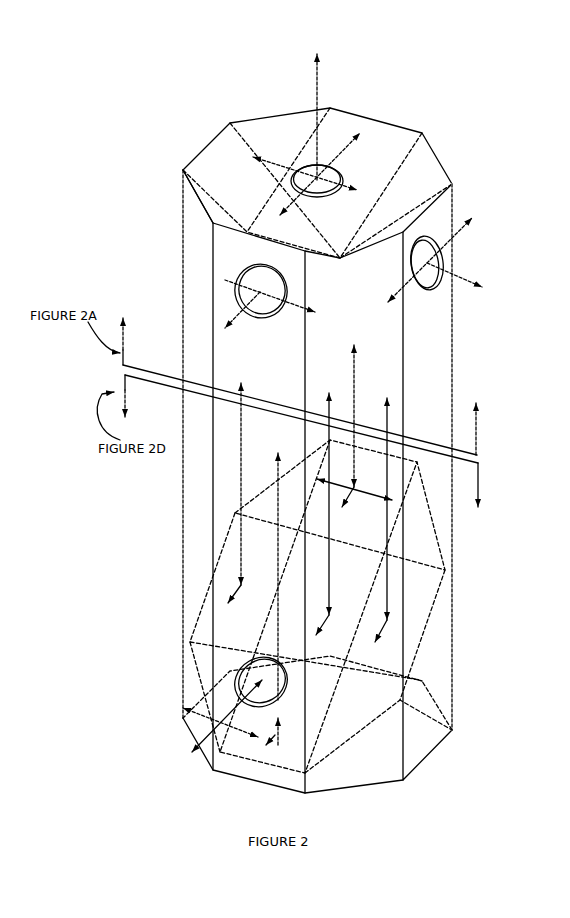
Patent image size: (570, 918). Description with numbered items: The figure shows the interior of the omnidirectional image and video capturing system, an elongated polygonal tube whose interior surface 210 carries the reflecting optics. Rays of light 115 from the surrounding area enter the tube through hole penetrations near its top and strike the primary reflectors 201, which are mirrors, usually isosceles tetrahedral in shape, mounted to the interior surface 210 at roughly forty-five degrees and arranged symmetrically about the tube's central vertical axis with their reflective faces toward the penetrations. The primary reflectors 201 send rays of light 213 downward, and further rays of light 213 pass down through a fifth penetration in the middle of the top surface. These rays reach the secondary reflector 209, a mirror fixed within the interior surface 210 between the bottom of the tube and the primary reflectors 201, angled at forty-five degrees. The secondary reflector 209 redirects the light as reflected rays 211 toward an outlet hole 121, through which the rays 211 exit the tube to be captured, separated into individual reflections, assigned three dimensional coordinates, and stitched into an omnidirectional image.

The primary reflector 201 is at (424, 175).
The rays of light 115 is at (468, 272).
The interior surface 210 is at (433, 409).
The rays of light 213 is at (403, 480).
The reflected rays of light 211 is at (377, 641).
The secondary reflector 209 is at (304, 632).
The outlet hole 121 is at (228, 688).